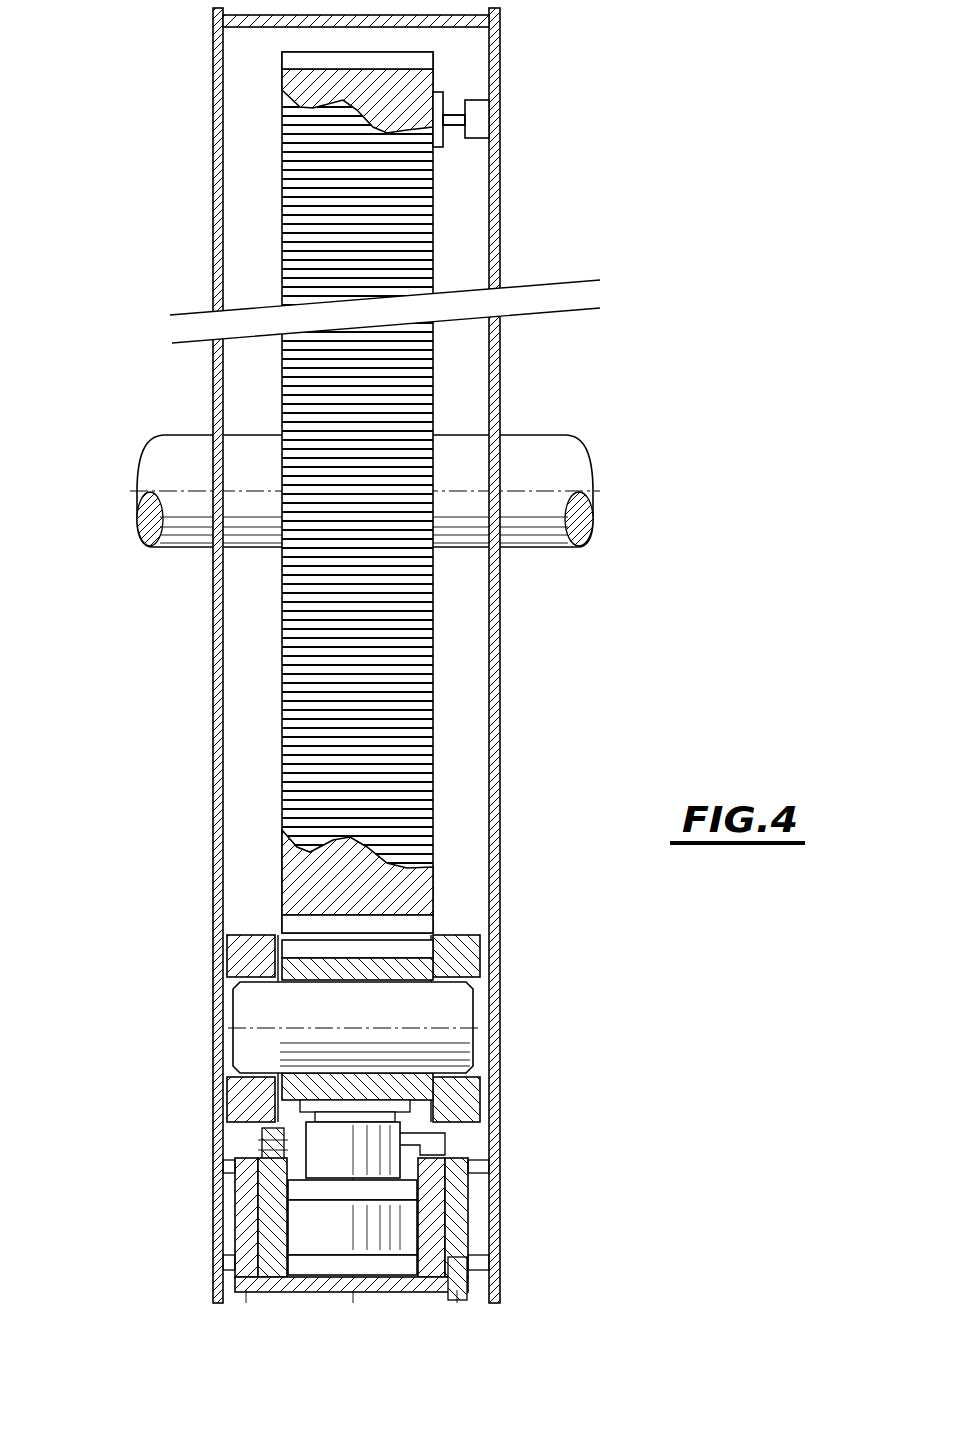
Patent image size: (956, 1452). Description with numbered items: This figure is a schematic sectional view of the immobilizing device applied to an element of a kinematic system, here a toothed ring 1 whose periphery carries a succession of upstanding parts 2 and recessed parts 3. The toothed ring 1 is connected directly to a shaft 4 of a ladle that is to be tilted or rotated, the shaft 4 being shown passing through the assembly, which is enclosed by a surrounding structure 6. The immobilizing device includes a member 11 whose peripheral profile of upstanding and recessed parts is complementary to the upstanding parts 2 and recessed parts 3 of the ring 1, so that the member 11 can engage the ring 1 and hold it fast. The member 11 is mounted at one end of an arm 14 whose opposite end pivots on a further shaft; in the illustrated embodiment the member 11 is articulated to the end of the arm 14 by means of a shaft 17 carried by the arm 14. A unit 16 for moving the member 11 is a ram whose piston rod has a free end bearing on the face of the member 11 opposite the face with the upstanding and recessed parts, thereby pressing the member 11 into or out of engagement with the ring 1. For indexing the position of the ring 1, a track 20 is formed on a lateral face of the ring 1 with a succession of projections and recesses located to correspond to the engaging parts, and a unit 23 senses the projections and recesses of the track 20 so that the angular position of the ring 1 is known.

The toothed ring 1 is at (315, 883).
The upstanding parts 2 is at (305, 385).
The recessed parts 3 is at (305, 598).
The shaft 4 is at (556, 465).
The housing walls 6 is at (500, 708).
The member 11 is at (385, 968).
The arm 14 is at (252, 960).
The unit for moving the member 16 is at (388, 1226).
The shaft 17 is at (425, 1012).
The track 20 is at (440, 105).
The unit for sensing 23 is at (457, 145).